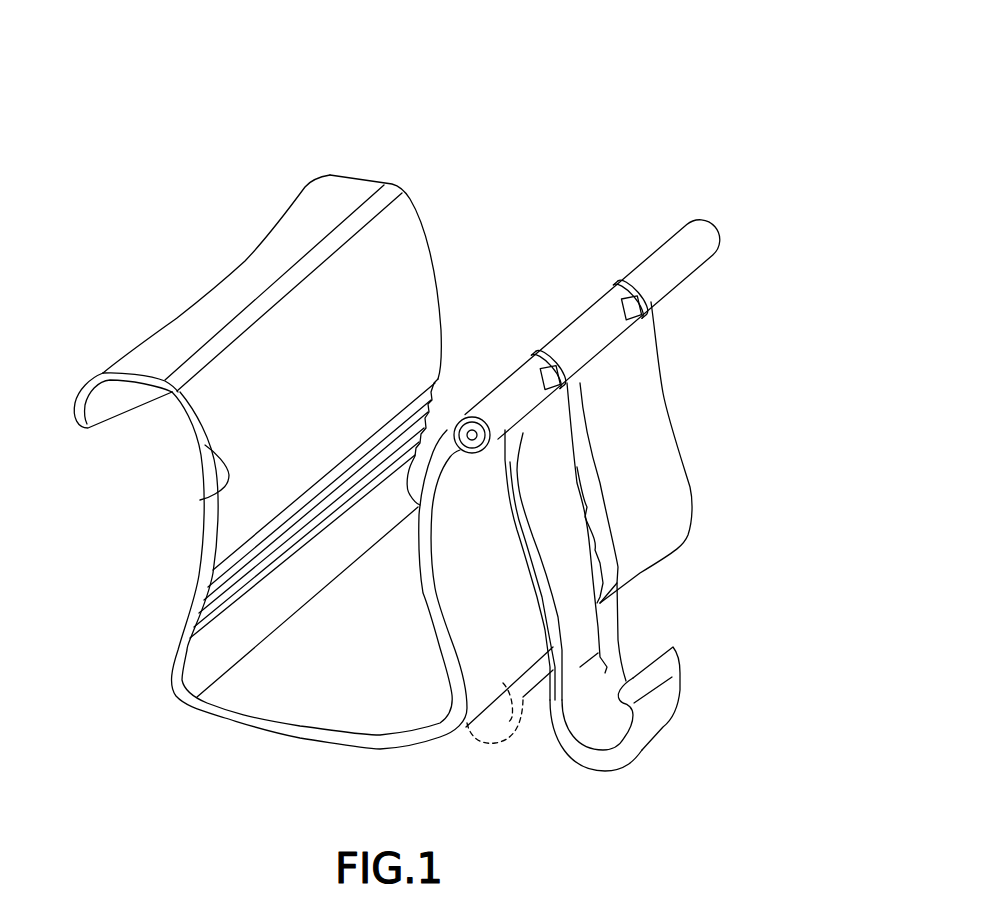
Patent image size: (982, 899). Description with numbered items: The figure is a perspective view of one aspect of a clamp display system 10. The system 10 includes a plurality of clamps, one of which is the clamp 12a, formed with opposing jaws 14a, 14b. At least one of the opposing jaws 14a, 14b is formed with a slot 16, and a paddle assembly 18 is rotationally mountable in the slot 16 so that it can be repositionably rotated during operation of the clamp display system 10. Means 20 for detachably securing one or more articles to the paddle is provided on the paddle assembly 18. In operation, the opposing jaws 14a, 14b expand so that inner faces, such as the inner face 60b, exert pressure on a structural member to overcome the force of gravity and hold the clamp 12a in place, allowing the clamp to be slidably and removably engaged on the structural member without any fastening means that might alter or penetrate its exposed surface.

The clamp display system 10 is at (634, 134).
The clamp 12a is at (663, 393).
The opposing jaw 14a is at (675, 498).
The opposing jaw 14b is at (408, 237).
The slot 16 is at (551, 704).
The paddle assembly 18 is at (659, 614).
The means for detachably securing one or more articles to the paddle 20 is at (670, 727).
The inner face 60b is at (222, 487).